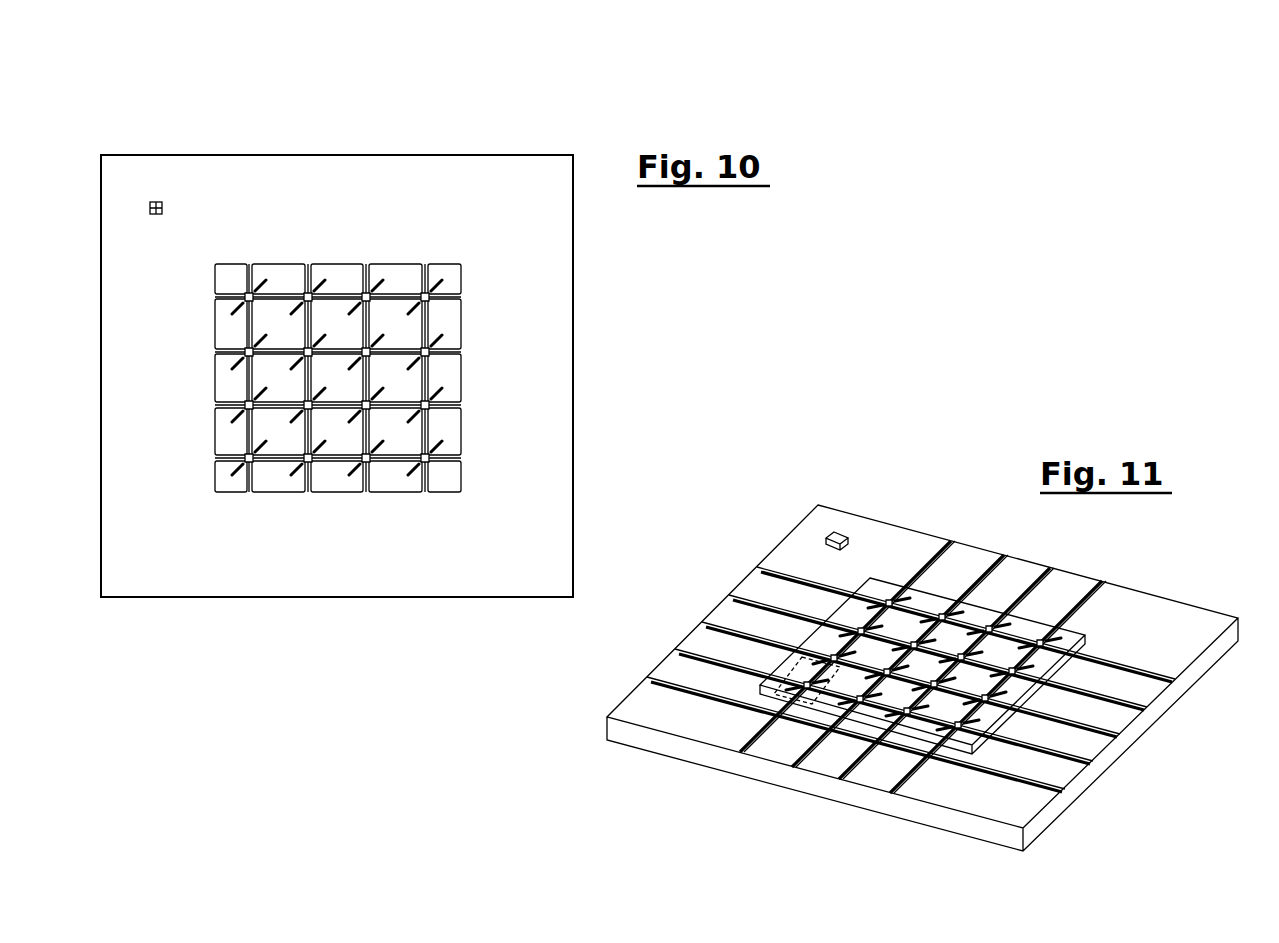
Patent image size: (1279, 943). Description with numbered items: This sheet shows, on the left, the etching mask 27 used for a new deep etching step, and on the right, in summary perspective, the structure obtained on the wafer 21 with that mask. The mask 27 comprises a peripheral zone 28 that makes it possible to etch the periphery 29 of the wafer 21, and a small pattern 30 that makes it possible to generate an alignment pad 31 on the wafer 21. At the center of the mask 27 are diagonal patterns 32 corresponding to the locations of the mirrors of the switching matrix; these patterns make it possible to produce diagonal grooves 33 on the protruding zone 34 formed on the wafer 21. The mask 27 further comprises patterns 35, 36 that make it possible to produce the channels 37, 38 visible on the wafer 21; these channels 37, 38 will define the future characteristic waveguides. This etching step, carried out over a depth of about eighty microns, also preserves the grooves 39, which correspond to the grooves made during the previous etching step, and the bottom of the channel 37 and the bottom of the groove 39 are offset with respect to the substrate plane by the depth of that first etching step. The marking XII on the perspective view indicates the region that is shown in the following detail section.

In FIG. 11, the wafer 21 is at (795, 553).
In FIG. 10, the mask 27 is at (437, 379).
In FIG. 10, the peripheral zone 28 is at (530, 298).
In FIG. 11, the periphery 29 is at (905, 548).
In FIG. 10, the pattern 30 is at (163, 205).
In FIG. 11, the alignment pad 31 is at (840, 531).
In FIG. 10, the patterns 32 is at (264, 288).
In FIG. 11, the diagonal grooves 33 is at (938, 605).
In FIG. 11, the protruding zone 34 is at (962, 740).
In FIG. 10, the patterns 35 is at (415, 290).
In FIG. 10, the patterns 36 is at (330, 462).
In FIG. 11, the channel 37 is at (1035, 652).
In FIG. 11, the channel 38 is at (1022, 638).
In FIG. 11, the grooves 39 is at (780, 750).
In FIG. 11, the section XII is at (757, 684).